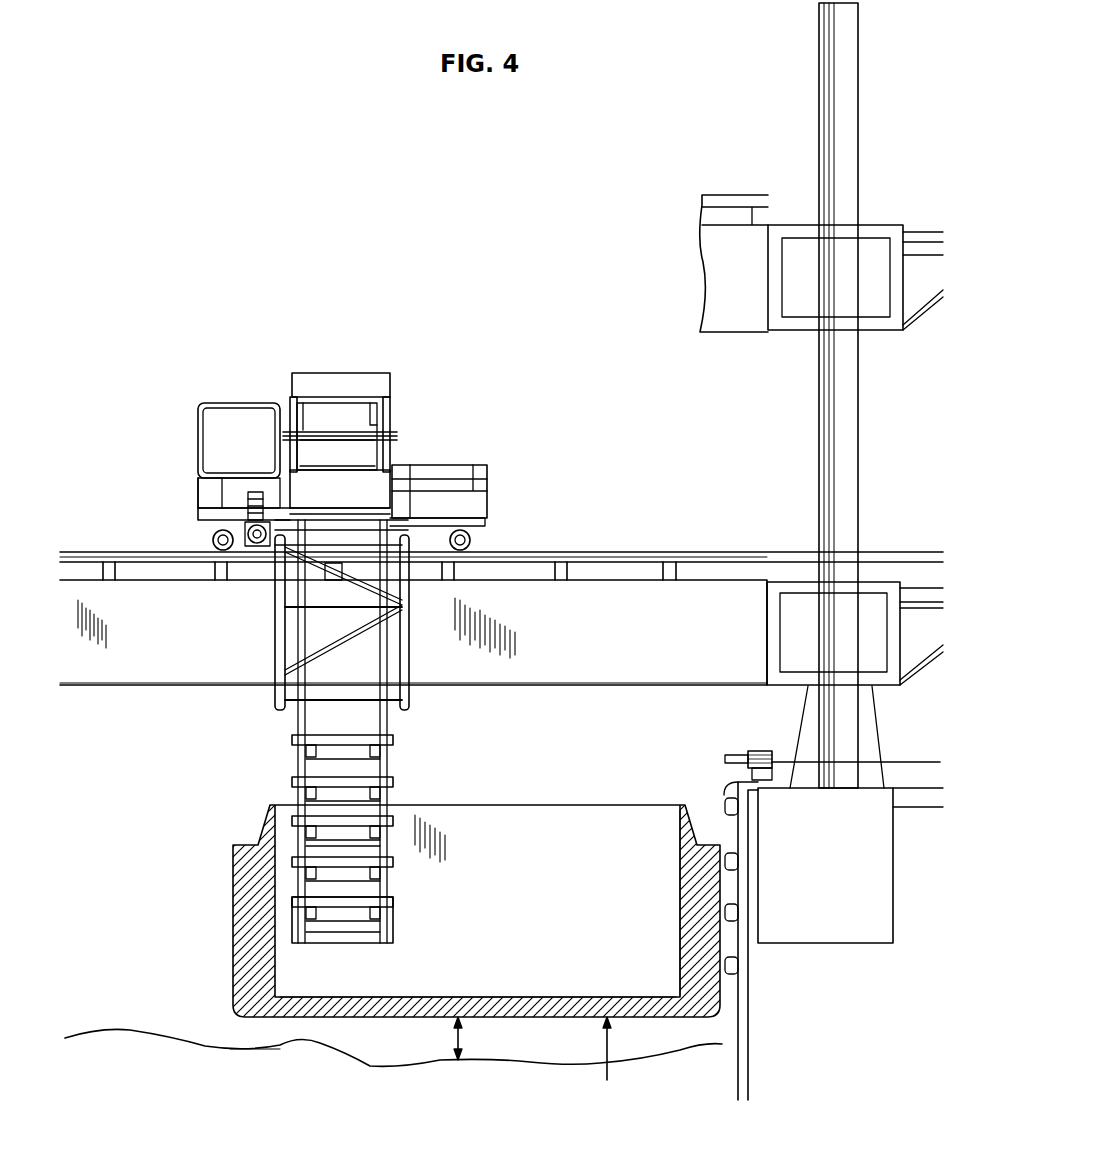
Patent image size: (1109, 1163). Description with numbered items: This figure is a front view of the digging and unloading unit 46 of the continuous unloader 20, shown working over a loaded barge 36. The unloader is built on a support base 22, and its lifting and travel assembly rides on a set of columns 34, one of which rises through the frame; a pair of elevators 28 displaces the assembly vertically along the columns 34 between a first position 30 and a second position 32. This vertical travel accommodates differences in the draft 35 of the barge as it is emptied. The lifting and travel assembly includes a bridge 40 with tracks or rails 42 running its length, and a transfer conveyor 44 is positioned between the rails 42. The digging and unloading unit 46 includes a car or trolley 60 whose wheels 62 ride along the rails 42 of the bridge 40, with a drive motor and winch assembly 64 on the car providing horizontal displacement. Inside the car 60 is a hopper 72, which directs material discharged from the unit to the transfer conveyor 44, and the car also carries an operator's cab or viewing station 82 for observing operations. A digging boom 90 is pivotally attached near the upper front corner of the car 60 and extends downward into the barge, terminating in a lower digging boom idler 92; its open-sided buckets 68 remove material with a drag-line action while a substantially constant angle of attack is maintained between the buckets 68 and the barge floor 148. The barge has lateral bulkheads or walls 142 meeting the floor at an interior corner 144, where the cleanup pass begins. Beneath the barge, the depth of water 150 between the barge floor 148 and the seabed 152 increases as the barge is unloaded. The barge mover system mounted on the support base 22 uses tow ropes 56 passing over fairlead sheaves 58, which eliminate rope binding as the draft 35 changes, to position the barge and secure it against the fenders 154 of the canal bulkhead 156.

The continuous unloader 20 is at (383, 312).
The support base 22 is at (855, 842).
The elevators 28 is at (882, 225).
The first position 30 is at (818, 582).
The second position 32 is at (808, 223).
The columns 34 is at (820, 50).
The draft 35 is at (457, 1040).
The loaded container or barge 36 is at (607, 1075).
The bridge 40 is at (700, 245).
The tracks or rails 42 is at (620, 552).
The transfer conveyor 44 is at (805, 574).
The digging and unloading unit 46 is at (402, 413).
The tow ropes 56 is at (930, 762).
The fairlead sheaves 58 is at (752, 752).
The car or trolley 60 is at (488, 517).
The wheels 62 is at (213, 540).
The drive motor and winch assembly 64 is at (248, 497).
The open-sided buckets 68 is at (350, 937).
The hopper 72 is at (332, 450).
The operator's cab or viewing station 82 is at (232, 403).
The digging boom 90 is at (396, 792).
The lower digging boom idler 92 is at (393, 905).
The lateral bulkheads or walls 142 is at (685, 912).
The interior corner 144 is at (680, 995).
The barge floor 148 is at (545, 997).
The depth of water 150 is at (150, 978).
The seabed 152 is at (227, 1049).
The fenders 154 is at (735, 872).
The canal bulkhead 156 is at (720, 1040).